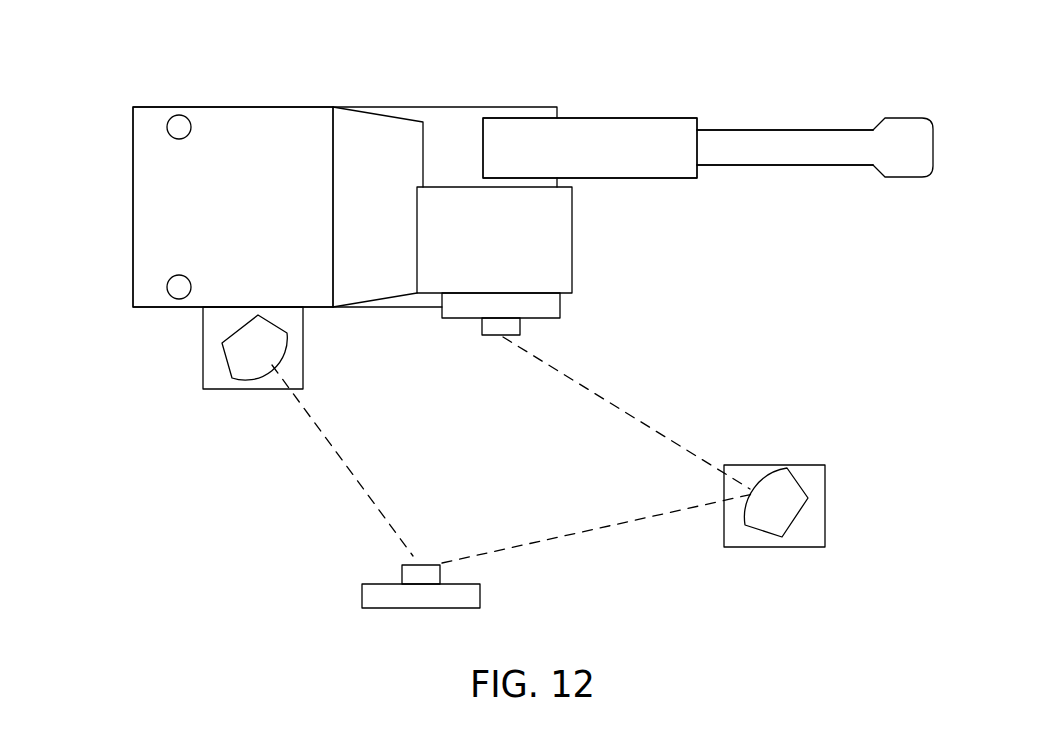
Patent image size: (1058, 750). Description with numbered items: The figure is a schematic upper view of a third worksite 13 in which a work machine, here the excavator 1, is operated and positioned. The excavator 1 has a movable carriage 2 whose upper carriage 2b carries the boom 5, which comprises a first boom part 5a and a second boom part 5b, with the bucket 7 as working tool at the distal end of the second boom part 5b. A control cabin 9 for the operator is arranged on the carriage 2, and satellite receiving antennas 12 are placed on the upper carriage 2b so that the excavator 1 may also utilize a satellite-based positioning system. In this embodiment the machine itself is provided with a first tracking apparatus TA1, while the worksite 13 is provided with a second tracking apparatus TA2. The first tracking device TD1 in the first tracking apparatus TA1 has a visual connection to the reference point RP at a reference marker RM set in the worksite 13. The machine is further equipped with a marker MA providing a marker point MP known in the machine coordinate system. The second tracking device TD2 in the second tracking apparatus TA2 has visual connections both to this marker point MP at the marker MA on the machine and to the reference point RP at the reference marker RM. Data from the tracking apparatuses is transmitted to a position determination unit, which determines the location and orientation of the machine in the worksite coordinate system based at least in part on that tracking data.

The excavator 1 is at (272, 90).
The movable carriage 2 is at (130, 218).
The upper carriage 2b is at (240, 220).
The antennas 12 is at (180, 127).
The control cabin 9 is at (475, 255).
The boom 5 is at (660, 104).
The first boom part 5a is at (587, 137).
The second boom part 5b is at (790, 140).
The bucket 7 is at (912, 135).
The worksite 13 is at (900, 308).
The marker MA is at (537, 303).
The marker point MP is at (507, 325).
The first tracking apparatus TA1 is at (213, 367).
The first tracking device TD1 is at (275, 343).
The reference point RP is at (410, 581).
The reference marker RM is at (378, 596).
The second tracking apparatus TA2 is at (813, 519).
The second tracking device TD2 is at (784, 488).